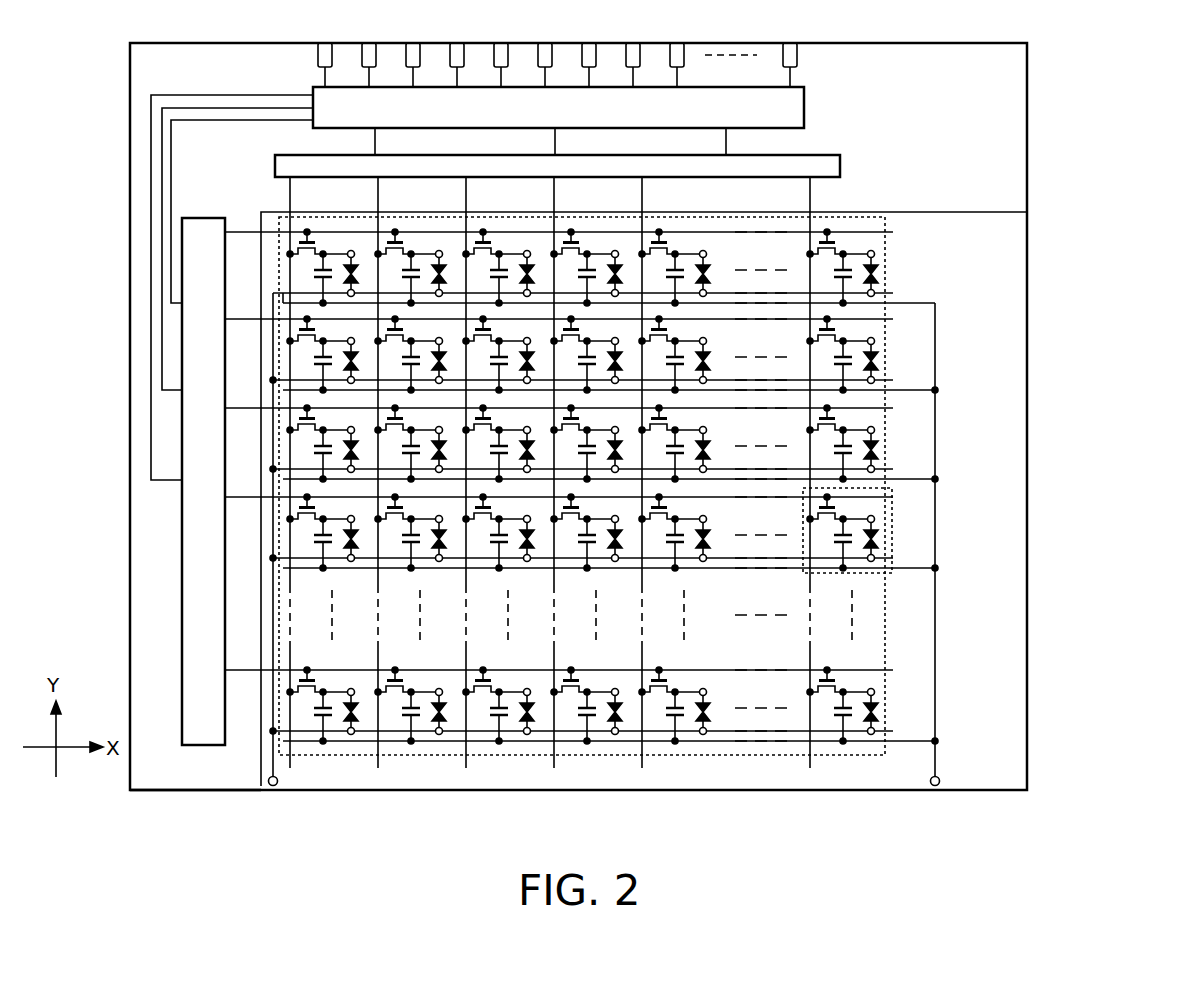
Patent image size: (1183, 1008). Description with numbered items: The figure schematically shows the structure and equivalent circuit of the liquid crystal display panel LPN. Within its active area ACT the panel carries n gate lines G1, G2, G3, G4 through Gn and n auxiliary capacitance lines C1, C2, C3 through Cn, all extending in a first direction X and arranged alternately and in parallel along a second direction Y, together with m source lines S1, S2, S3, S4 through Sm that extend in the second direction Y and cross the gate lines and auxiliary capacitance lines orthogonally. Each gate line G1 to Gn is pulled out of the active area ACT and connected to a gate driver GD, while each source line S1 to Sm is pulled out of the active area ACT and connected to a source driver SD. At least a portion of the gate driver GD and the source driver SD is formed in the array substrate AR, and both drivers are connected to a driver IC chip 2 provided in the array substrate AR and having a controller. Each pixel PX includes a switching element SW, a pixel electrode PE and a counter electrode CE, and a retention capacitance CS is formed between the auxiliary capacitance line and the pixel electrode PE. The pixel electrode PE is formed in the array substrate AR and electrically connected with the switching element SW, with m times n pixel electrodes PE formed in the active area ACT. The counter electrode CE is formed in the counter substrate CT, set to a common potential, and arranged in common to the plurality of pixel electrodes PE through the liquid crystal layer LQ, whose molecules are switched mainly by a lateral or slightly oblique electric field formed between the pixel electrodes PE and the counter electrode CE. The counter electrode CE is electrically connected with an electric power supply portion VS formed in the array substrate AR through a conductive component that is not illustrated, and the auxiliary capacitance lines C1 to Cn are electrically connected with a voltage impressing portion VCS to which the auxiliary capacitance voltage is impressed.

The liquid crystal display panel LPN is at (1058, 56).
The driver IC chip 2 is at (806, 108).
The source driver SD is at (842, 165).
The gate driver GD is at (182, 600).
The counter substrate CT is at (930, 212).
The array substrate AR is at (198, 780).
The active area ACT is at (885, 333).
The pixel PX is at (859, 533).
The switching element SW is at (805, 509).
The retention capacitance CS is at (824, 541).
The liquid crystal layer LQ is at (876, 534).
The pixel electrode PE is at (874, 517).
The counter electrode CE is at (875, 555).
The gate line G1 is at (239, 227).
The gate line G2 is at (239, 314).
The gate line G3 is at (239, 403).
The gate line G4 is at (239, 492).
The gate line Gn is at (239, 665).
The source line S1 is at (293, 200).
The source line S2 is at (381, 200).
The source line S3 is at (469, 200).
The source line S4 is at (557, 200).
The source line Sm is at (813, 199).
The auxiliary capacitance line C1 is at (910, 301).
The auxiliary capacitance line C2 is at (910, 389).
The auxiliary capacitance line C3 is at (910, 478).
The auxiliary capacitance line Cn is at (910, 740).
The electric power supply portion VS is at (277, 786).
The voltage impressing portion VCS is at (939, 778).